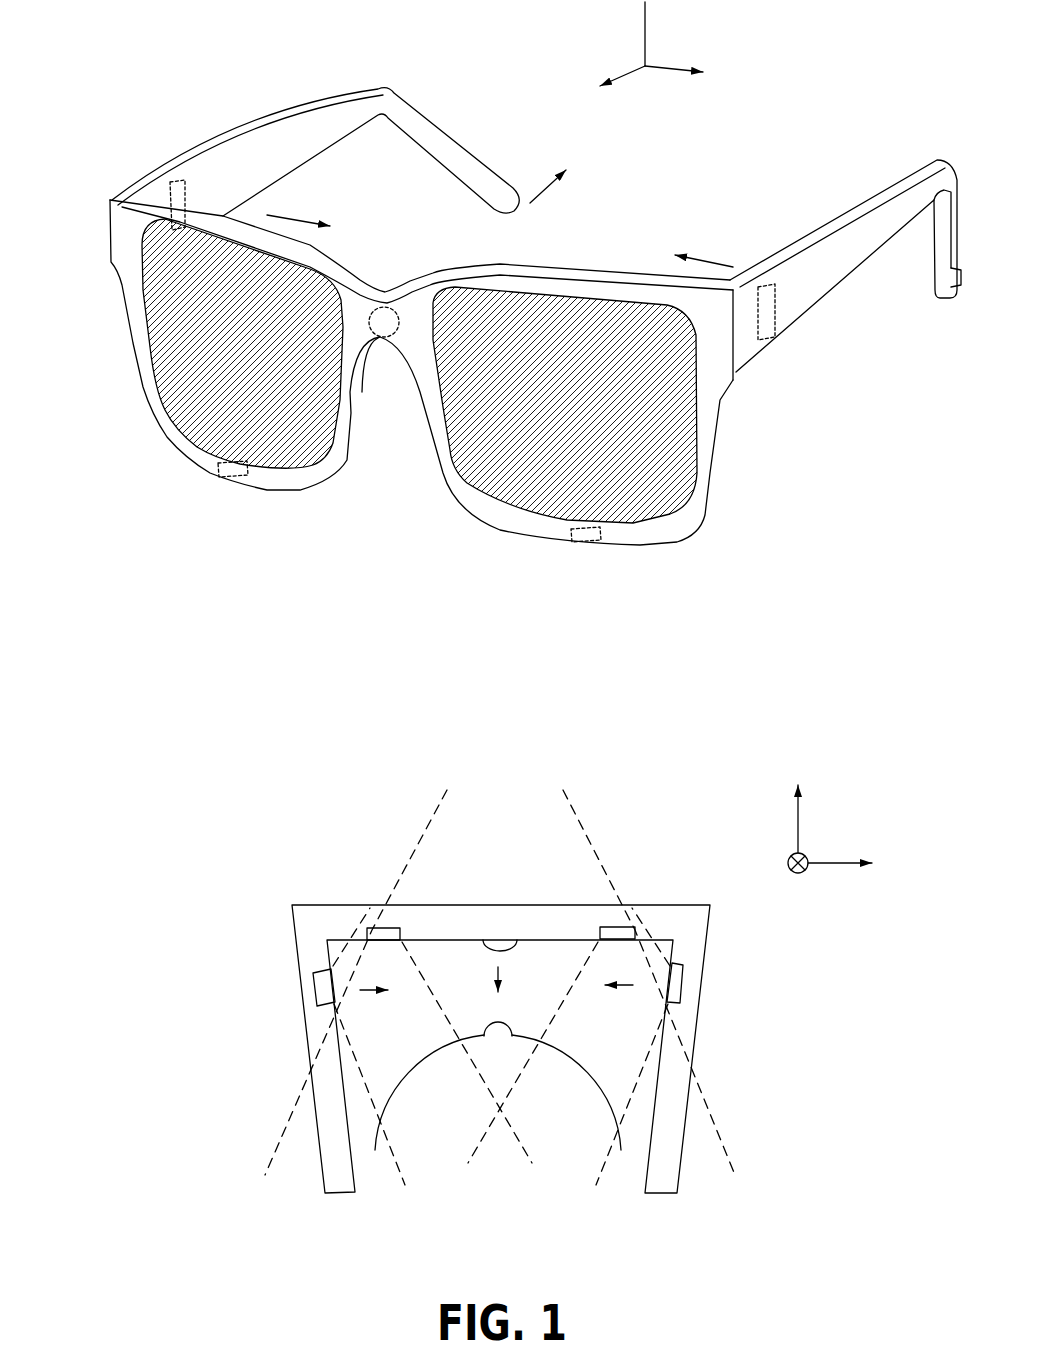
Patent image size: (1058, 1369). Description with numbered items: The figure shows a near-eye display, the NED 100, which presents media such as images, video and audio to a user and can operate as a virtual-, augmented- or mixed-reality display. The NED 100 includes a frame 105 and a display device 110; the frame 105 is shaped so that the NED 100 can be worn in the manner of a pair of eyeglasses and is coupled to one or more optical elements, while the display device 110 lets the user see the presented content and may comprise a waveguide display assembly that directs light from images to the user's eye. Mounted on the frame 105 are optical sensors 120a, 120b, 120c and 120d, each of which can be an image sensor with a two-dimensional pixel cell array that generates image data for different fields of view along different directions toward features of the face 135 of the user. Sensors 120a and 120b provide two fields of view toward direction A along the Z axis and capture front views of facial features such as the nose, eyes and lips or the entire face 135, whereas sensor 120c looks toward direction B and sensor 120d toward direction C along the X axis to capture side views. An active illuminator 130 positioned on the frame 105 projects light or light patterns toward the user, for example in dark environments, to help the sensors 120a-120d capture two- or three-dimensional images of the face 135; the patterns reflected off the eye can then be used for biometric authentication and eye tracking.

The NED 100 is at (503, 630).
The frame 105 is at (801, 230).
The display device 110 is at (223, 398).
The optical sensor 120a is at (232, 476).
The optical sensor 120b is at (601, 535).
The optical sensor 120c is at (768, 310).
The optical sensor 120d is at (773, 957).
The illuminator 130 is at (383, 320).
The face 135 is at (420, 1114).